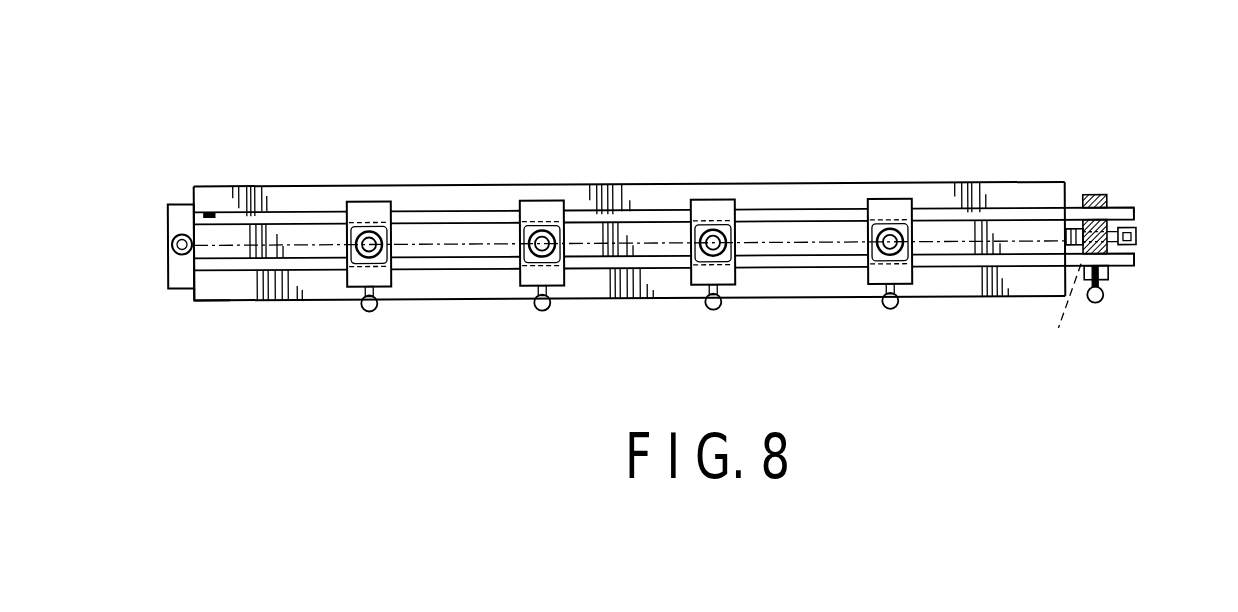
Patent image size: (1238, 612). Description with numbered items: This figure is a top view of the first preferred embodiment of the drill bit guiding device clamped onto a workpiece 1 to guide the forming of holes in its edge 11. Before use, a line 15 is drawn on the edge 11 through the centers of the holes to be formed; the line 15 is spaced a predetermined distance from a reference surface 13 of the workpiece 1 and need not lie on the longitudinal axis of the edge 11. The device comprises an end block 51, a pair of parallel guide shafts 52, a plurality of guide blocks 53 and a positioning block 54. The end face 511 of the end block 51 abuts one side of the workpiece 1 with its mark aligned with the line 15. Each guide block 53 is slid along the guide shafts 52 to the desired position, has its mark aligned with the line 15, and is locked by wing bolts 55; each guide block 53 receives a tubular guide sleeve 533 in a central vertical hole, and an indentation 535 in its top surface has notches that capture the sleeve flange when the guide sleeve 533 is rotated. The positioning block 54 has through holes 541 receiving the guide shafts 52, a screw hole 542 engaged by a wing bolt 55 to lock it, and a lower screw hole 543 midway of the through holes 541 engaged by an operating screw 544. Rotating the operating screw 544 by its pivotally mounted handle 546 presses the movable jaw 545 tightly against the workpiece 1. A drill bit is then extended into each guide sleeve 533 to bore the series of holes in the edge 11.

The workpiece 1 is at (314, 308).
The edge 11 is at (675, 287).
The reference surface 13 is at (483, 186).
The line 15 is at (653, 240).
The end block 51 is at (177, 217).
The end face 511 is at (197, 277).
The guide shafts 52 is at (1127, 207).
The guide block 53 is at (377, 207).
The guide sleeve 533 is at (332, 209).
The indentation 535 is at (922, 208).
The positioning block 54 is at (1098, 195).
The through holes 541 is at (1115, 205).
The screw hole 542 is at (1107, 282).
The screw hole 543 is at (1059, 314).
The operating screw 544 is at (1145, 218).
The movable jaw 545 is at (1070, 207).
The handle 546 is at (1138, 236).
The wing bolts 55 is at (548, 312).